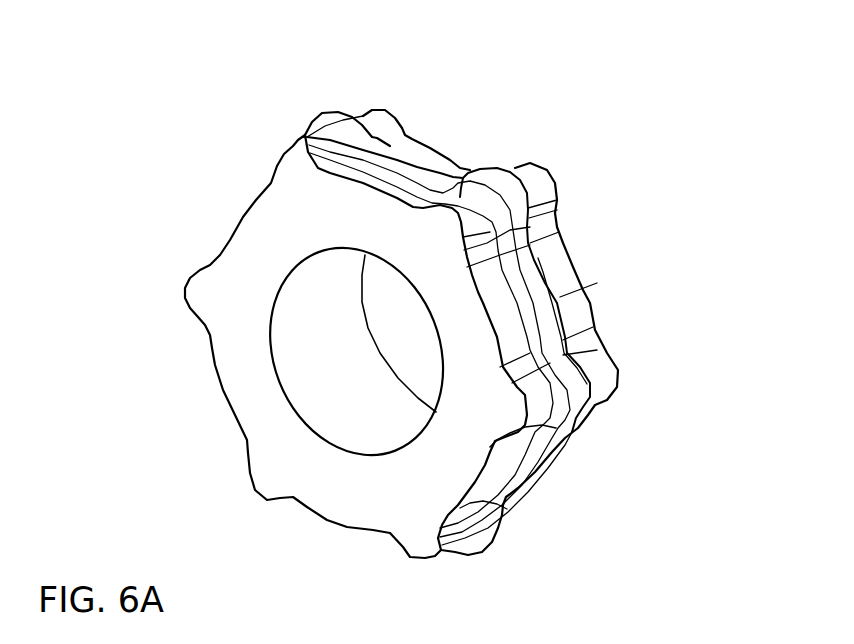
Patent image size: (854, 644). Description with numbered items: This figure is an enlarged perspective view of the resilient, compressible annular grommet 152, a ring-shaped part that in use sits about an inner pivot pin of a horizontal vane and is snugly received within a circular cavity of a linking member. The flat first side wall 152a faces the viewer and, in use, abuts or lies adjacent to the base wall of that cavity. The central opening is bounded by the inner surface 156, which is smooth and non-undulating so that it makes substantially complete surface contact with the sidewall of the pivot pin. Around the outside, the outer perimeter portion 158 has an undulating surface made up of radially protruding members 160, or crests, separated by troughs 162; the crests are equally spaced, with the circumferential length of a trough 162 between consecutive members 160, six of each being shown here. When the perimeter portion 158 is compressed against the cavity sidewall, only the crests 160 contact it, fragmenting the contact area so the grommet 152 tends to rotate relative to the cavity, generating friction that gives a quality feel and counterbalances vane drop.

The annular grommet 152 is at (533, 327).
The first side wall 152a is at (343, 346).
The inner surface 156 is at (306, 351).
The outer perimeter portion 158 is at (413, 107).
The radially protruding members 160 is at (410, 332).
The troughs 162 is at (501, 322).